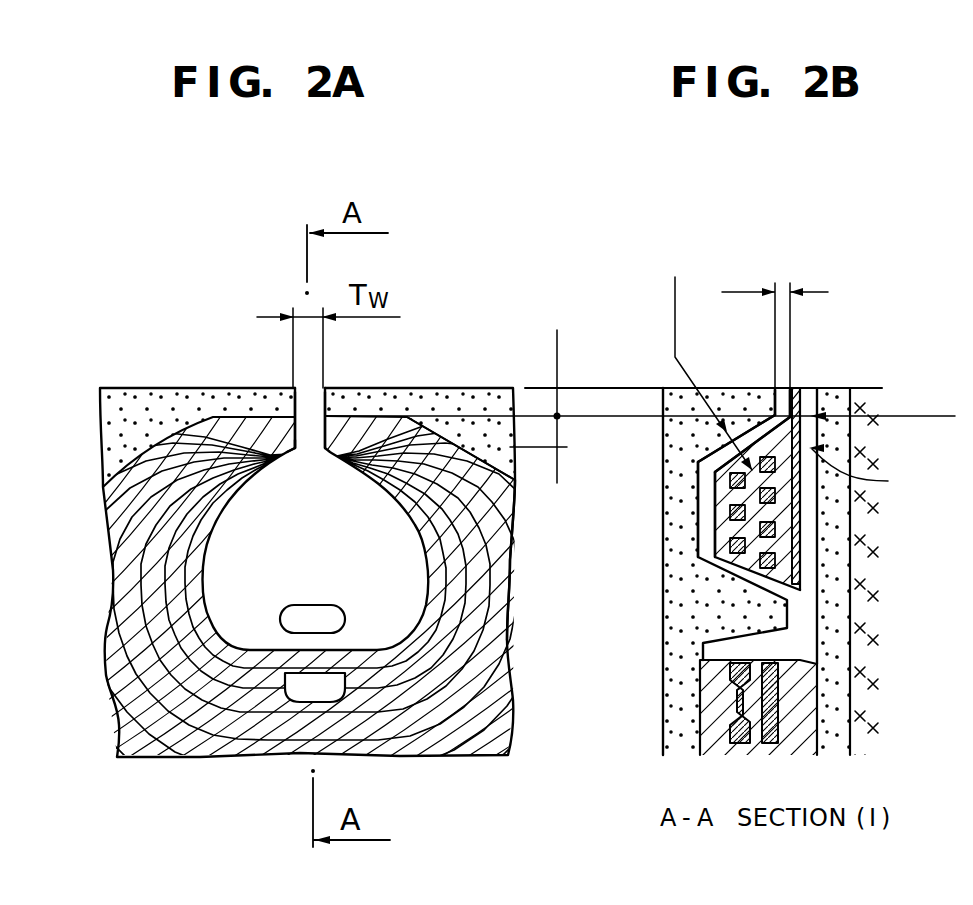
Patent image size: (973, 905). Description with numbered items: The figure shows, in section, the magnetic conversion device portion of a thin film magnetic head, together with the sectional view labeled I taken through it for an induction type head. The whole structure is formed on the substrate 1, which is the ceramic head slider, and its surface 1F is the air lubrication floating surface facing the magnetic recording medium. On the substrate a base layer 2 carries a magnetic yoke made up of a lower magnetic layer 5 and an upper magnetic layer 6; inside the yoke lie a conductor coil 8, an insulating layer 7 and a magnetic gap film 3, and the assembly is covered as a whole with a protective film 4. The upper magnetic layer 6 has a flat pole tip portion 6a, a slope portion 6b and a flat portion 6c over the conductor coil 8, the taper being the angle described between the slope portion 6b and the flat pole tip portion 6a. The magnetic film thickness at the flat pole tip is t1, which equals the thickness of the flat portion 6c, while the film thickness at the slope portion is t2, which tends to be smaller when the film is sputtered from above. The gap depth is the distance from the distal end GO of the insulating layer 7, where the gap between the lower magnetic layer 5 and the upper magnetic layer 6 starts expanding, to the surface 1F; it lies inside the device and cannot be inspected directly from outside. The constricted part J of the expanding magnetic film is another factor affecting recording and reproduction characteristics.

In FIG. 2B, the substrate (head slider) 1 is at (863, 386).
In FIG. 2A, the surface 1F is at (425, 387).
In FIG. 2B, the base layer 2 is at (828, 386).
In FIG. 2B, the magnetic gap film 3 is at (797, 386).
In FIG. 2B, the protective film 4 is at (755, 425).
In FIG. 2B, the lower magnetic layer 5 is at (884, 572).
In FIG. 2A, the upper magnetic layer 6 is at (403, 607).
In FIG. 2B, the upper magnetic layer 6 is at (735, 575).
In FIG. 2B, the pole tip portion 6a is at (768, 398).
In FIG. 2B, the slope portion 6b is at (700, 452).
In FIG. 2B, the flat portion of the upper magnetic layer 6c is at (700, 497).
In FIG. 2A, the insulating layer 7 is at (487, 498).
In FIG. 2B, the insulating layer 7 is at (720, 517).
In FIG. 2A, the conductor coil 8 is at (497, 558).
In FIG. 2B, the conductor coil 8 is at (717, 550).
In FIG. 2A, the groove entrance I is at (300, 423).
In FIG. 2A, the constricted part J is at (292, 447).
In FIG. 2B, the distal end of the insulating layer GO is at (640, 399).
In FIG. 2B, the thickness of the magnetic film at the flat portion of the pole tip portion t1 is at (774, 323).
In FIG. 2B, the thickness of the magnetic film of the slope portion t2 is at (690, 373).